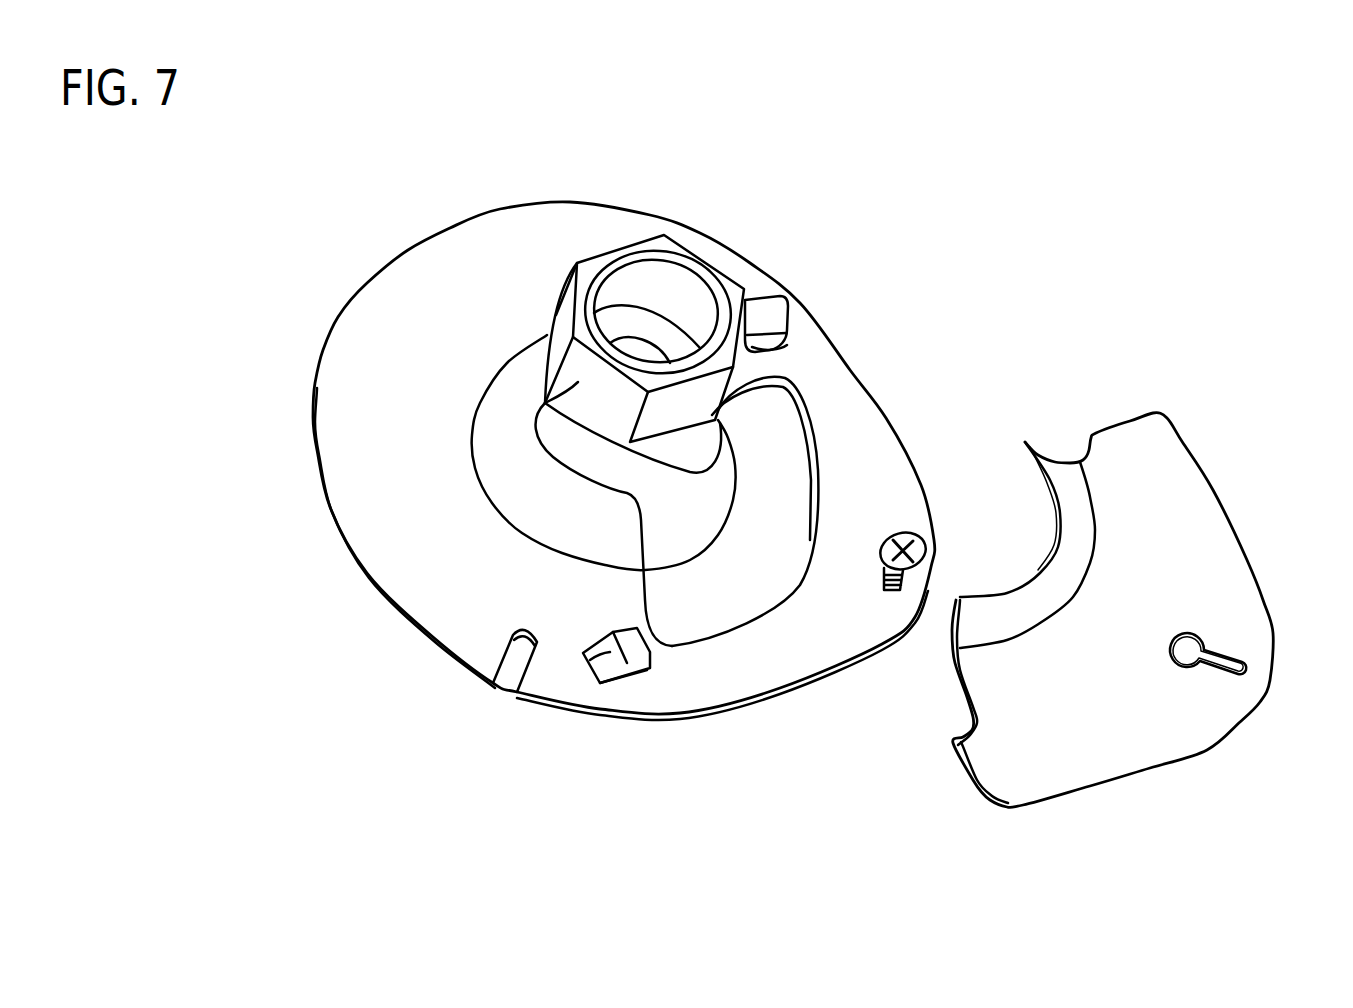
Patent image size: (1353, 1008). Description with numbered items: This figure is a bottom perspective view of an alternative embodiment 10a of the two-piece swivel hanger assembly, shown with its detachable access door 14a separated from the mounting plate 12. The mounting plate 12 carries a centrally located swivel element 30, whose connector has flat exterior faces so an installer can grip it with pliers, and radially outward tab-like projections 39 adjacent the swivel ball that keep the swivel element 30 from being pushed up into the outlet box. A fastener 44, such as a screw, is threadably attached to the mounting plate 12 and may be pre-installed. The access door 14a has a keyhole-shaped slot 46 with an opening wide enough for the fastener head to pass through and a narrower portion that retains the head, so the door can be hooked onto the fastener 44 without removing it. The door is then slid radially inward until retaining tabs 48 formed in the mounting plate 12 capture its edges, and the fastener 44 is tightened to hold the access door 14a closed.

The alternative embodiment of the two-piece swivel hanger assembly 10a is at (324, 721).
The mounting plate 12 is at (327, 503).
The access door 14a is at (1210, 483).
The swivel element 30 is at (547, 406).
The tab-like projections 39 is at (683, 447).
The fastener 44 is at (890, 536).
The slot 46 is at (1200, 640).
The tab 48 is at (772, 327).